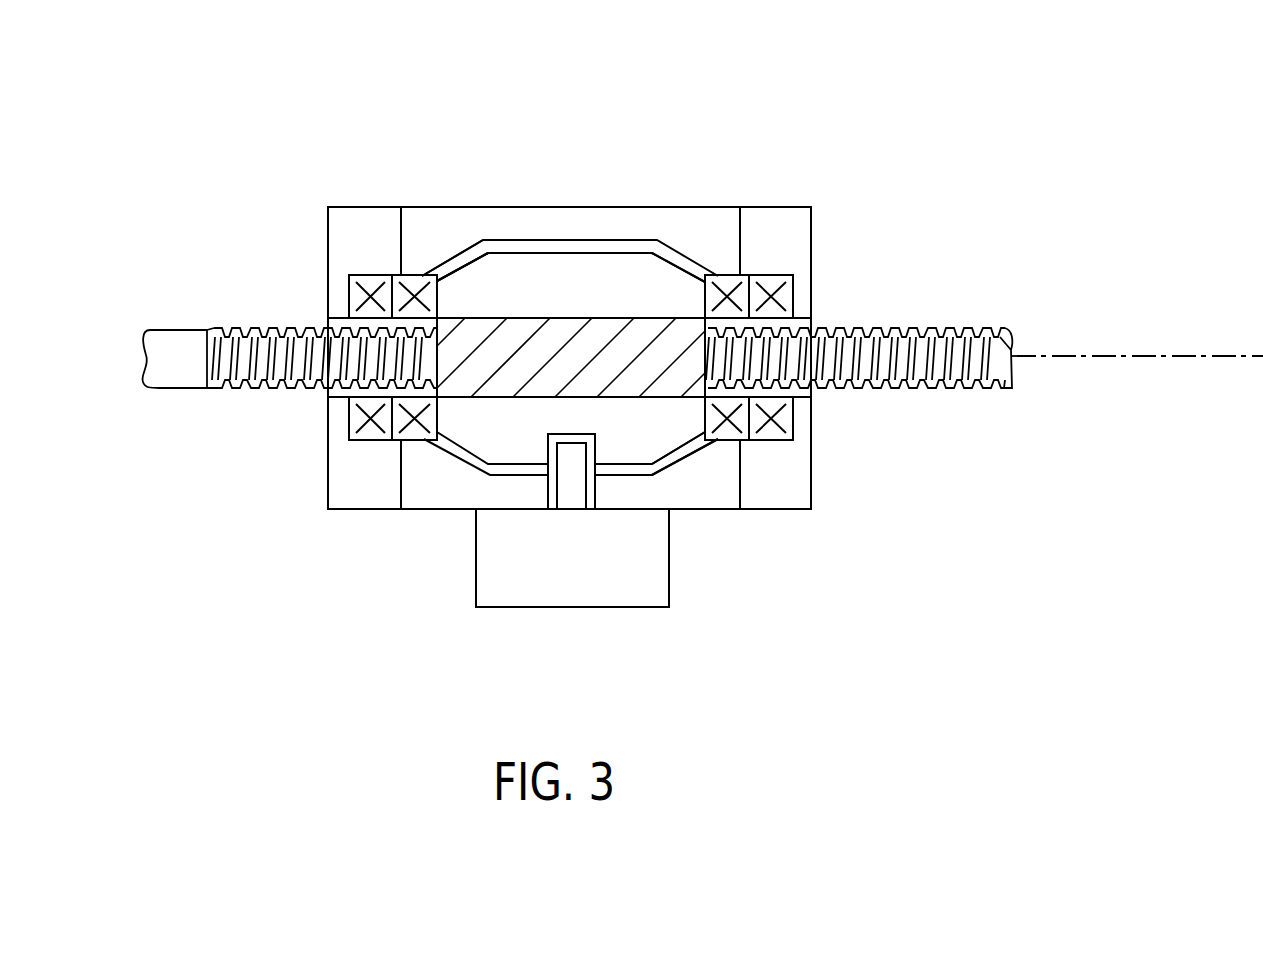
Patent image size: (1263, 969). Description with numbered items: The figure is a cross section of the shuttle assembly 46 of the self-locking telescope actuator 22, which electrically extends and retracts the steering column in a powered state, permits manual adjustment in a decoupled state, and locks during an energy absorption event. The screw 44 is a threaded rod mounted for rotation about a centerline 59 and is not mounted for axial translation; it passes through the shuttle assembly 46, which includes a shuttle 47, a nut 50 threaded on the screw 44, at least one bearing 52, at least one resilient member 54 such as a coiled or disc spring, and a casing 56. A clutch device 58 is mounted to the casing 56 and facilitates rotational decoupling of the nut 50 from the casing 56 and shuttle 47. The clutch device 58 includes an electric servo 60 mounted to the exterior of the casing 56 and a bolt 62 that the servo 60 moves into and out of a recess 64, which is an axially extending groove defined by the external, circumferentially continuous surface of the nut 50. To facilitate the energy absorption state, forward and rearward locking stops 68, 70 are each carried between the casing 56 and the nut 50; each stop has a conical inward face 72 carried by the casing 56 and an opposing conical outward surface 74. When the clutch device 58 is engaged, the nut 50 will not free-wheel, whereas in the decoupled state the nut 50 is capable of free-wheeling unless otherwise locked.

The self-locking telescope actuator 22 is at (184, 113).
The screw 44 is at (215, 330).
The shuttle assembly 46 is at (702, 510).
The shuttle 47 is at (800, 228).
The nut 50 is at (475, 440).
The bearing 52 is at (415, 280).
The resilient member 54 is at (782, 295).
The casing 56 is at (578, 218).
The clutch device 58 is at (566, 620).
The centerline 59 is at (1218, 360).
The electric servo 60 is at (648, 608).
The bolt 62 is at (565, 490).
The recess 64 is at (572, 437).
The forward locking stop 68 is at (457, 252).
The rearward locking stop 70 is at (693, 247).
The inward face 72 is at (476, 263).
The outward surface 74 is at (488, 275).